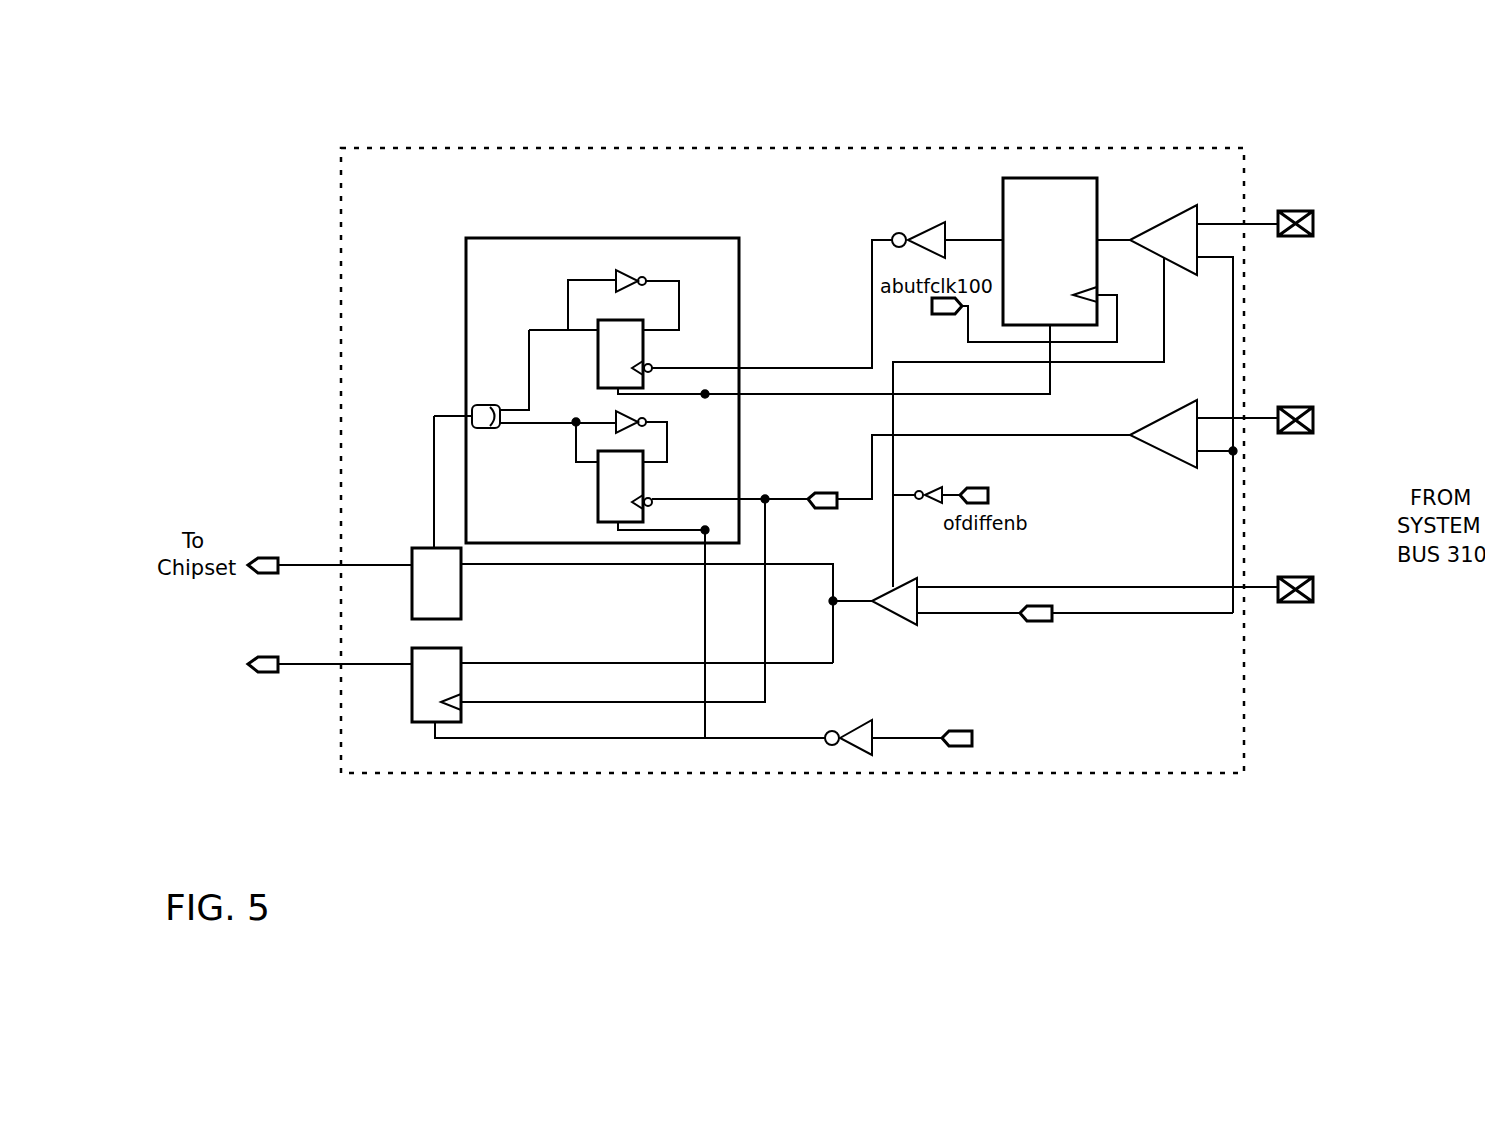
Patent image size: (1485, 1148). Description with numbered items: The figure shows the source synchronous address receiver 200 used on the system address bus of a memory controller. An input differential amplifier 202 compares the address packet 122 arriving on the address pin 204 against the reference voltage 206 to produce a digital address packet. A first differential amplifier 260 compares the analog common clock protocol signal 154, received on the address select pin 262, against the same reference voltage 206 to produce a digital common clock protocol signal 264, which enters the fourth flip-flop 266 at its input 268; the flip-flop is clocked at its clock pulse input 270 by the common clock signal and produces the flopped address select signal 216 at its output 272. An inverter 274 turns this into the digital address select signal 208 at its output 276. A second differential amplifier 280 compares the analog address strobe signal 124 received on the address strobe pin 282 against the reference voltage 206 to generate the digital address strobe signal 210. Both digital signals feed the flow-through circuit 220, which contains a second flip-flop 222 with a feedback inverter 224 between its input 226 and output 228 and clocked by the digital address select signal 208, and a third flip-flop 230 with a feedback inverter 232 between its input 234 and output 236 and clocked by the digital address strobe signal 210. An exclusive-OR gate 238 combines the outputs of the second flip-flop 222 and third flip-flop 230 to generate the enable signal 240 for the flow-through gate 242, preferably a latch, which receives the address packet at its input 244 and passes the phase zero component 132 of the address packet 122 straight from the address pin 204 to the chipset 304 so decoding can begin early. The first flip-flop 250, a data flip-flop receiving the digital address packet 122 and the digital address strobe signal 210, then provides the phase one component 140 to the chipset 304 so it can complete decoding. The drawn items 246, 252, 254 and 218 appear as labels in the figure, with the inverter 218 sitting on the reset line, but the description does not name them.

The source synchronous address receiver 200 is at (792, 479).
The flow-through circuit 220 is at (739, 240).
The second flip-flop 222 is at (648, 353).
The feedback inverter 224 is at (637, 278).
The input of the second flip-flop 226 is at (650, 328).
The output of the second flip-flop 228 is at (588, 328).
The third flip-flop 230 is at (647, 470).
The feedback inverter 232 is at (617, 414).
The input of the third flip-flop 234 is at (647, 458).
The output of the third flip-flop 236 is at (592, 466).
The exclusive-OR gate 238 is at (489, 430).
The enable signal 240 is at (445, 503).
The flow-through gate 242 is at (462, 603).
The input of the flow-through gate 244 is at (462, 567).
The output 246 is at (412, 567).
The first flip-flop 250 is at (458, 732).
The D input 252 is at (462, 653).
The output 254 is at (412, 658).
The first differential amplifier 260 is at (1172, 210).
The address select pin 262 is at (1297, 210).
The digital common clock protocol signal 264 is at (1122, 232).
The fourth flip-flop 266 is at (1053, 176).
The input of the fourth flip-flop 268 is at (1102, 228).
The clock pulse input of the fourth flip-flop 270 is at (1090, 298).
The output of the fourth flip-flop 272 is at (1003, 236).
The inverter 274 is at (913, 230).
The output of the inverter 276 is at (892, 236).
The second differential amplifier 280 is at (1162, 412).
The address strobe pin 282 is at (1297, 407).
The input differential amplifier 202 is at (889, 618).
The address pin 204 is at (1297, 577).
The reference voltage 206 is at (1128, 603).
The digital address select signal 208 is at (828, 363).
The digital address strobe signal 210 is at (780, 508).
The flopped address select signal 216 is at (982, 230).
The inverter 218 is at (905, 748).
The address packet 122 is at (1163, 577).
The analog source synchronous strobe signal 124 is at (1300, 433).
The phase zero component 132 is at (312, 556).
The phase one component 140 is at (312, 655).
The analog common clock protocol signal 154 is at (1297, 237).
The chipset 304 is at (191, 595).